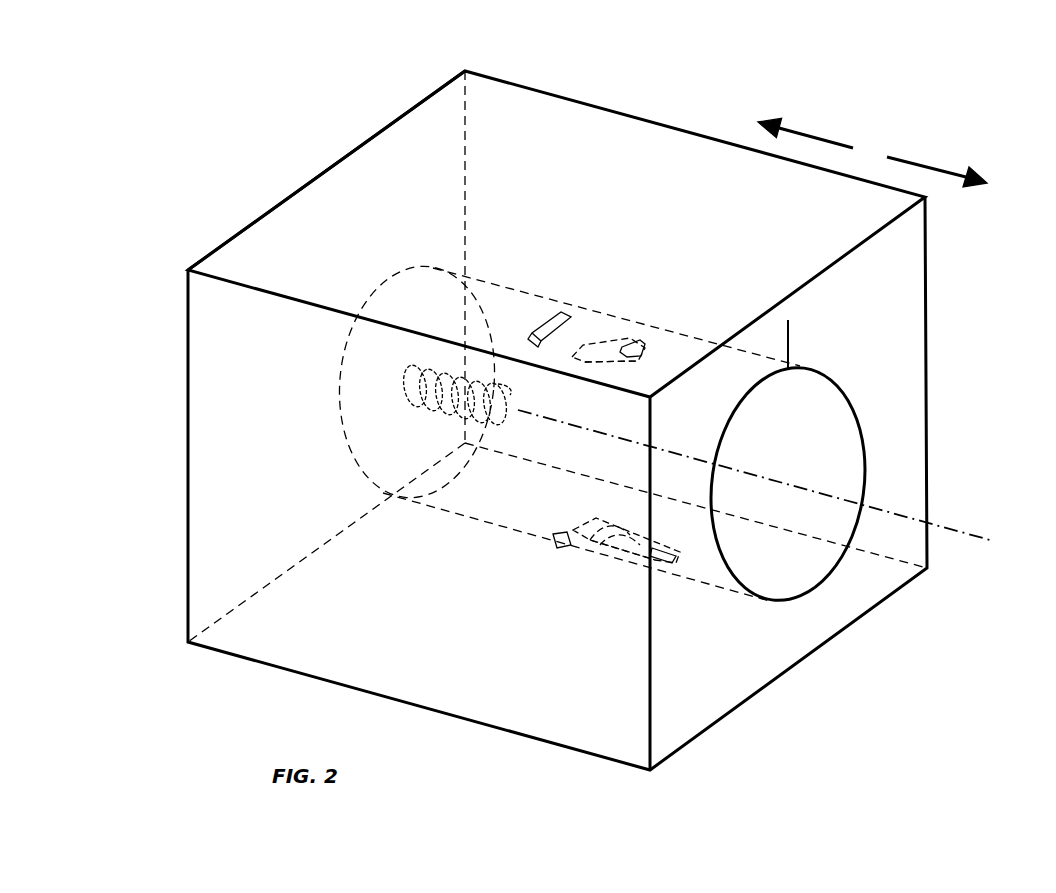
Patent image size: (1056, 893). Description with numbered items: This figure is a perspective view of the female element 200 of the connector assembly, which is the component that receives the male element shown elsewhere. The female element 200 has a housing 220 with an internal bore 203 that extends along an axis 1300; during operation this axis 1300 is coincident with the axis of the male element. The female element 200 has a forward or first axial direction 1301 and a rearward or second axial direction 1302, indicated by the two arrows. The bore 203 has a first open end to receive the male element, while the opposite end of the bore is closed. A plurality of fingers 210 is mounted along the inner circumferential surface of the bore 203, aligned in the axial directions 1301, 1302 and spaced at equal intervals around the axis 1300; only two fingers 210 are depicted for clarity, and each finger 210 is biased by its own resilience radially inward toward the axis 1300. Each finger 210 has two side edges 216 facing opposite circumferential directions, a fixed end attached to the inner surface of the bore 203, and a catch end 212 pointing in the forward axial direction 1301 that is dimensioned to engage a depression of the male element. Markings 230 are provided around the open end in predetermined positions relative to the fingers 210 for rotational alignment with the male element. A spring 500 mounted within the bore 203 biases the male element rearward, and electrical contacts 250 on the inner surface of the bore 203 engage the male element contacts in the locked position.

The female element 200 is at (255, 165).
The housing 220 is at (397, 153).
The markings 230 is at (788, 332).
The internal bore 203 is at (807, 408).
The axis 1300 is at (965, 530).
The first axial direction 1301 is at (817, 132).
The second axial direction 1302 is at (912, 160).
The spring 500 is at (437, 410).
The electrical contacts 250 is at (547, 317).
The catch end 212 is at (572, 355).
The fingers 210 is at (632, 345).
The side edges 216 is at (603, 360).